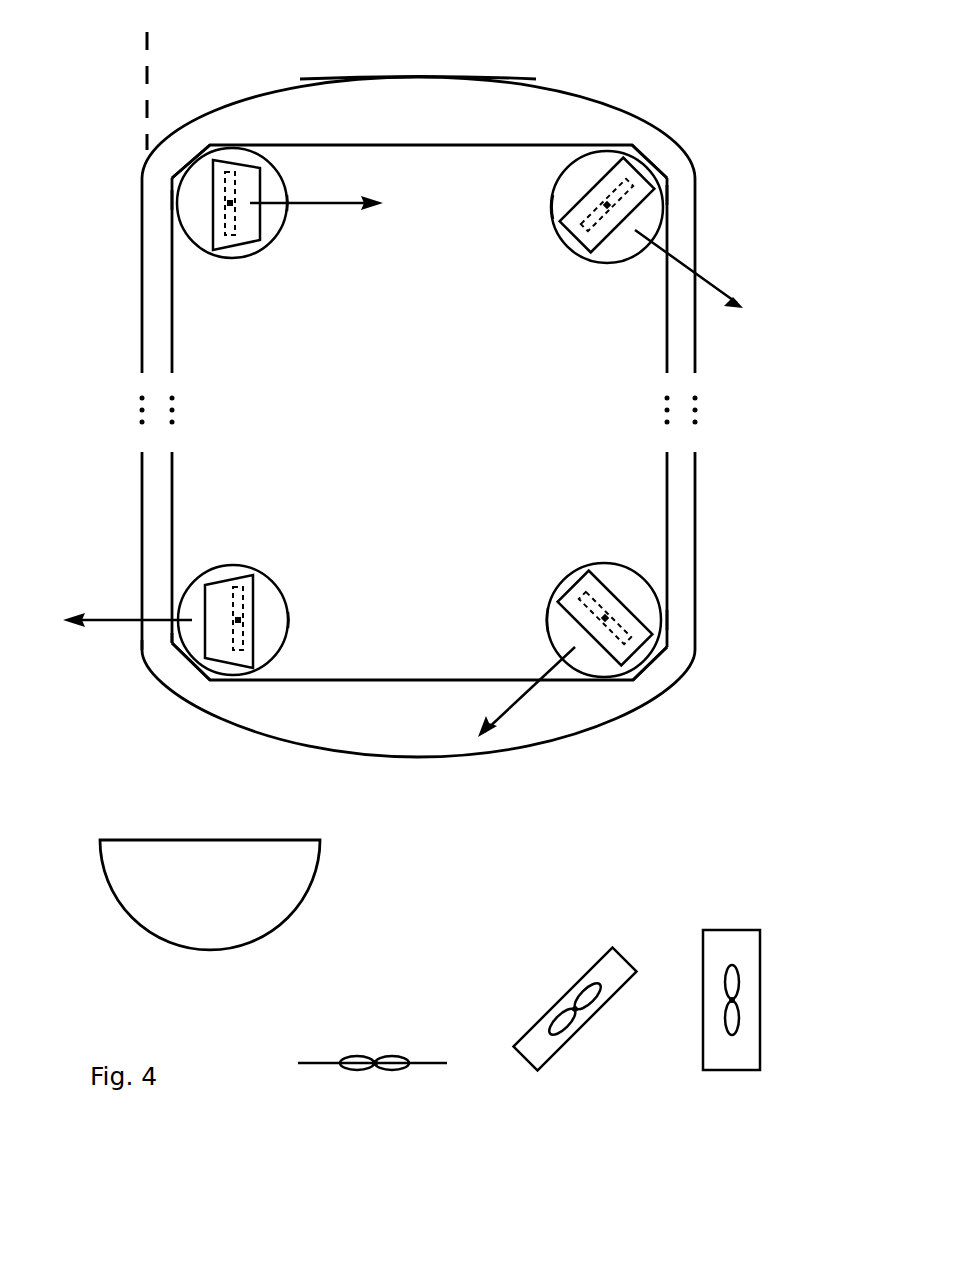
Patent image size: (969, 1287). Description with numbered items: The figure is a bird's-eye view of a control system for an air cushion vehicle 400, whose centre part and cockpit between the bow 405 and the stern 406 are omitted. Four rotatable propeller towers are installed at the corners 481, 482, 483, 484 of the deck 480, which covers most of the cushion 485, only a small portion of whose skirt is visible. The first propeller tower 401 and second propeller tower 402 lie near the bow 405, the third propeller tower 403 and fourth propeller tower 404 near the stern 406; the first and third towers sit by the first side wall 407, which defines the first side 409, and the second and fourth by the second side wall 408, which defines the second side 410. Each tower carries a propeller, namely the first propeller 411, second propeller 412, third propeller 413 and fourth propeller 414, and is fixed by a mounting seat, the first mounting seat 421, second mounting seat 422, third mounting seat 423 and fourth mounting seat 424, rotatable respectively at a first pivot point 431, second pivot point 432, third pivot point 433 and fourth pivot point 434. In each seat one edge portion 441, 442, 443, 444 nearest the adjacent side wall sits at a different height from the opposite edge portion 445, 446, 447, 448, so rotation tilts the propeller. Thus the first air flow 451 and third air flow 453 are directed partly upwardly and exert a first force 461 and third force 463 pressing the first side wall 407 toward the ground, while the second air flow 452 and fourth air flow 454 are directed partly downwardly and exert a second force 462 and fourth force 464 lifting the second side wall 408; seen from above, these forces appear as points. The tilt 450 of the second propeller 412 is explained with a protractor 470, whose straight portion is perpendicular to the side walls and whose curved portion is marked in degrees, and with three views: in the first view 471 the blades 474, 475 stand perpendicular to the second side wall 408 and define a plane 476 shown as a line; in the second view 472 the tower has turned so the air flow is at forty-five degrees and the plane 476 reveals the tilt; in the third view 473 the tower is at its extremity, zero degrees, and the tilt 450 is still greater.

The air cushion vehicle 400 is at (416, 413).
The first propeller tower 401 is at (196, 211).
The second propeller tower 402 is at (628, 235).
The third propeller tower 403 is at (207, 586).
The fourth propeller tower 404 is at (655, 584).
The bow 405 is at (427, 77).
The stern 406 is at (436, 760).
The first side wall 407 is at (145, 323).
The second side wall 408 is at (693, 330).
The first side 409 is at (93, 68).
The second side 410 is at (765, 398).
The first propeller 411 is at (196, 206).
The second propeller 412 is at (522, 643).
The third propeller 413 is at (207, 588).
The fourth propeller 414 is at (655, 584).
The first mounting seat 421 is at (236, 186).
The second mounting seat 422 is at (628, 208).
The third mounting seat 423 is at (211, 573).
The fourth mounting seat 424 is at (603, 620).
The first pivot point 431 is at (152, 231).
The second pivot point 432 is at (680, 228).
The third pivot point 433 is at (149, 588).
The fourth pivot point 434 is at (679, 587).
The edge portion 441 is at (172, 200).
The edge portion 442 is at (668, 194).
The edge portion 443 is at (167, 652).
The edge portion 444 is at (668, 622).
The opposite edge portion 445 is at (290, 208).
The opposite edge portion 446 is at (557, 200).
The opposite edge portion 447 is at (285, 622).
The opposite edge portion 448 is at (553, 613).
The tilt 450 is at (628, 228).
The first air flow 451 is at (376, 207).
The second air flow 452 is at (748, 308).
The third air flow 453 is at (93, 632).
The fourth air flow 454 is at (560, 640).
The first force 461 is at (152, 231).
The second force 462 is at (600, 286).
The third force 463 is at (235, 620).
The fourth force 464 is at (618, 612).
The protractor 470 is at (208, 908).
The first view 471 is at (382, 1014).
The second view 472 is at (548, 975).
The third view 473 is at (739, 896).
The blade 474 is at (355, 1070).
The blade 475 is at (395, 1070).
The plane 476 is at (532, 981).
The deck 480 is at (418, 312).
The corner 481 is at (165, 172).
The corner 482 is at (672, 170).
The corner 483 is at (190, 685).
The corner 484 is at (653, 670).
The cushion 485 is at (432, 100).